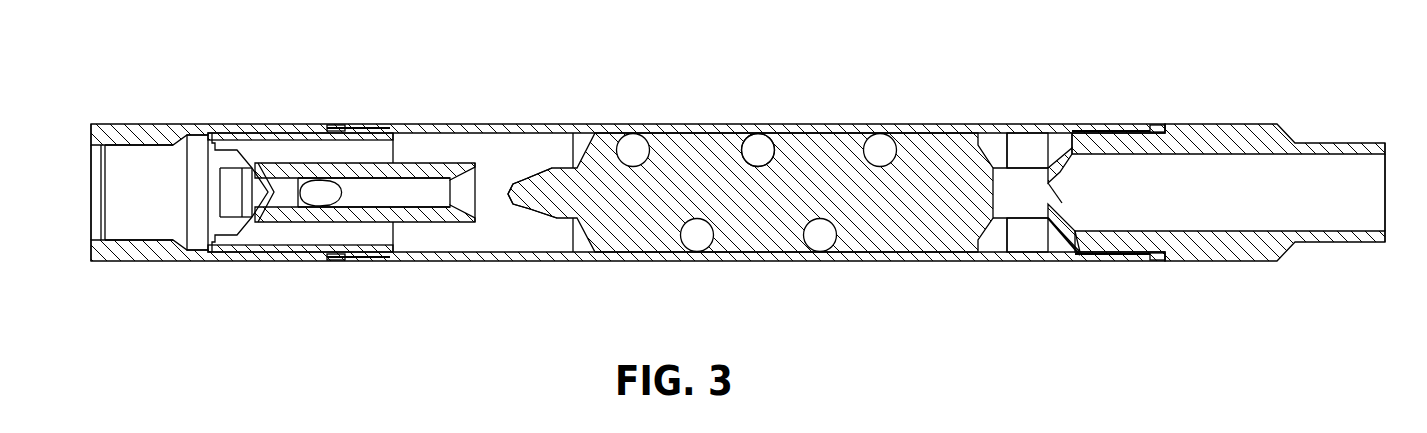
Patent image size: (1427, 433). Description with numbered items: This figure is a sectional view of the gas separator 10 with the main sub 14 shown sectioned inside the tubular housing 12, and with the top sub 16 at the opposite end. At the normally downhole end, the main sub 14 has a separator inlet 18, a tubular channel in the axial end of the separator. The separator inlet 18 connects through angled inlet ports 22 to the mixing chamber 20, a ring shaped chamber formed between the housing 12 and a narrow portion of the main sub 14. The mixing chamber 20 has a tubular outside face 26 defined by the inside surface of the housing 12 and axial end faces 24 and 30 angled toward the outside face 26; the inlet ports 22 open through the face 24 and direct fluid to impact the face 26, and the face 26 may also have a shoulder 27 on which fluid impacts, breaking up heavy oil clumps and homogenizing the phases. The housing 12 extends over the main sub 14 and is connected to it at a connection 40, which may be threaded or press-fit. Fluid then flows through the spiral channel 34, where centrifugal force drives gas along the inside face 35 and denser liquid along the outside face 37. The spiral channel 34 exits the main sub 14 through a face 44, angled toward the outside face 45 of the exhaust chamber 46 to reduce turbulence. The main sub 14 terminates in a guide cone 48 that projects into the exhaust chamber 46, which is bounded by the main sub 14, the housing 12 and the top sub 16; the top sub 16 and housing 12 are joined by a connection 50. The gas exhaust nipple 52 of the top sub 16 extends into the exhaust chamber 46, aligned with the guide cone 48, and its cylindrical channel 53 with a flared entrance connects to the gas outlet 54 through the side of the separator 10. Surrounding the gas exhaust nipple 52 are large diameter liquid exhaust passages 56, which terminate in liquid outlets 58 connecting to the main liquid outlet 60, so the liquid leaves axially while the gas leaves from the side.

The separator 10 is at (522, 60).
The tubular housing 12 is at (797, 263).
The main sub 14 is at (1215, 262).
The top sub 16 is at (140, 263).
The separator inlet 18 is at (1387, 183).
The mixing chamber 20 is at (998, 150).
The inlet ports 22 is at (1055, 165).
The axial end face 24 is at (1068, 150).
The outside face 26 is at (1020, 145).
The shoulder 27 is at (970, 252).
The axial end face 30 is at (985, 135).
The spiral channel 34 is at (697, 237).
The inside face 35 is at (752, 140).
The outside face 37 is at (764, 136).
The connection 40 is at (1158, 125).
The face 44 is at (587, 133).
The outside face 45 is at (470, 247).
The exhaust chamber 46 is at (502, 233).
The guide cone 48 is at (538, 203).
The connection 50 is at (336, 125).
The gas exhaust nipple 52 is at (406, 222).
The cylindrical channel 53 is at (437, 197).
The gas outlet 54 is at (310, 195).
The liquid exhaust passages 56 is at (277, 232).
The liquid outlets 58 is at (233, 143).
The main liquid outlet 60 is at (88, 166).